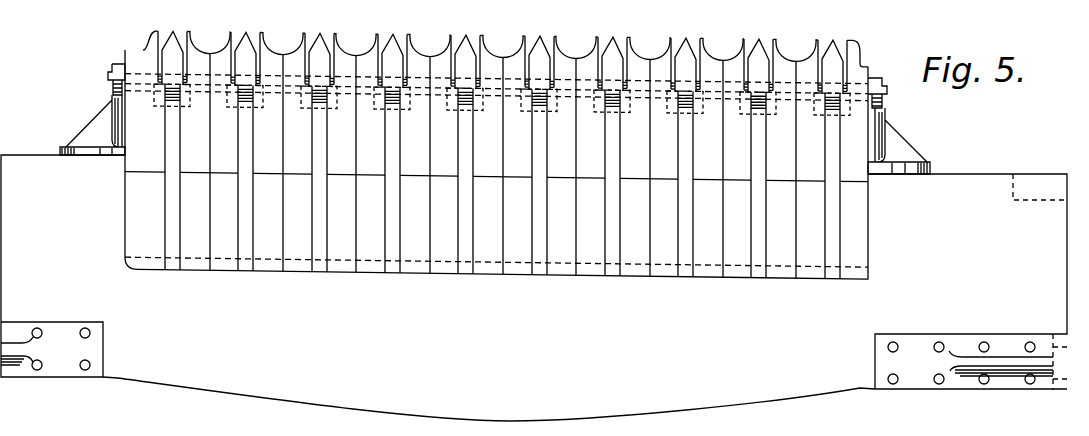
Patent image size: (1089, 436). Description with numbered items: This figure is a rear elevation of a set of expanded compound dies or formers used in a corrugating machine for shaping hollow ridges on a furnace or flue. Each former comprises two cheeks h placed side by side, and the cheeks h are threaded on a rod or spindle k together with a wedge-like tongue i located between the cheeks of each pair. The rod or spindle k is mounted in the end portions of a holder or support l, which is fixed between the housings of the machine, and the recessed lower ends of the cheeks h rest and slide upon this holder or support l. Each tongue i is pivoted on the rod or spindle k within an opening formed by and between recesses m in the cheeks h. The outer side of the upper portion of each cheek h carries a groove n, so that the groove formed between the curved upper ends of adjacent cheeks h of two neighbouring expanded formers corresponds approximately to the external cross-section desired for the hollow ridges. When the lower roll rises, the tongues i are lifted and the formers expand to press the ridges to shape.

The cheeks h is at (496, 155).
The wedge-like tongue i is at (502, 155).
The rod or spindle k is at (108, 76).
The holder or support l is at (534, 288).
The recesses m is at (238, 68).
The groove n is at (283, 50).